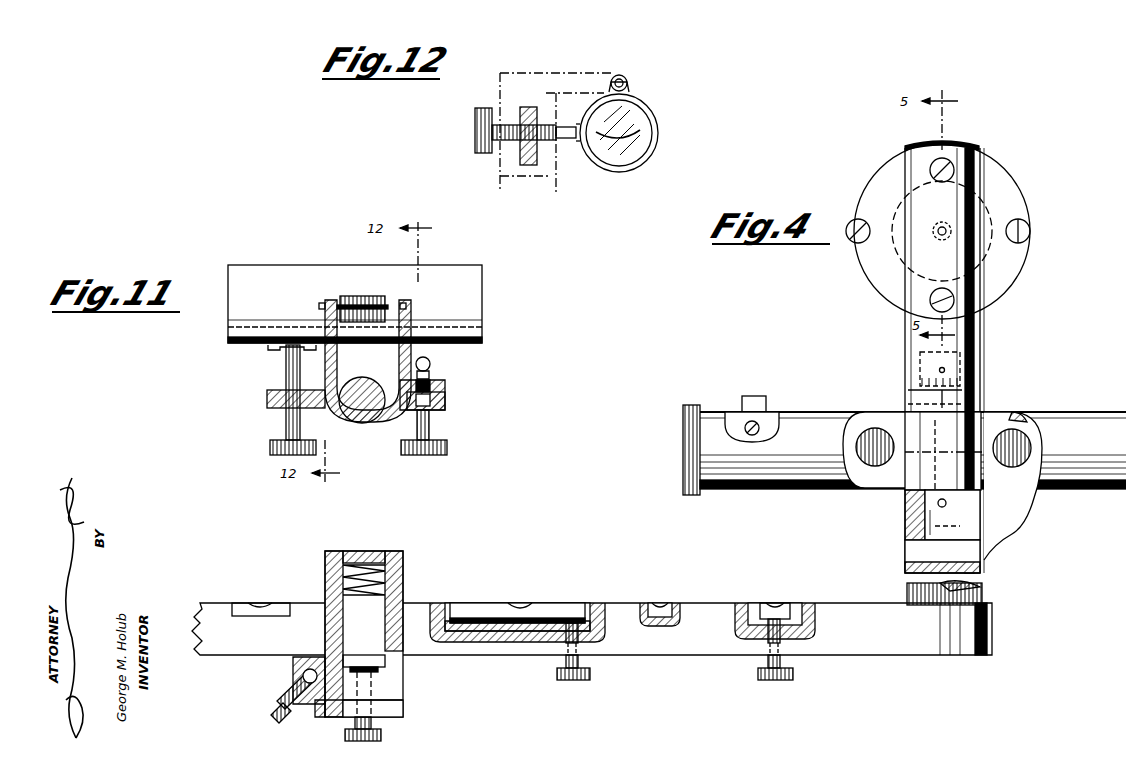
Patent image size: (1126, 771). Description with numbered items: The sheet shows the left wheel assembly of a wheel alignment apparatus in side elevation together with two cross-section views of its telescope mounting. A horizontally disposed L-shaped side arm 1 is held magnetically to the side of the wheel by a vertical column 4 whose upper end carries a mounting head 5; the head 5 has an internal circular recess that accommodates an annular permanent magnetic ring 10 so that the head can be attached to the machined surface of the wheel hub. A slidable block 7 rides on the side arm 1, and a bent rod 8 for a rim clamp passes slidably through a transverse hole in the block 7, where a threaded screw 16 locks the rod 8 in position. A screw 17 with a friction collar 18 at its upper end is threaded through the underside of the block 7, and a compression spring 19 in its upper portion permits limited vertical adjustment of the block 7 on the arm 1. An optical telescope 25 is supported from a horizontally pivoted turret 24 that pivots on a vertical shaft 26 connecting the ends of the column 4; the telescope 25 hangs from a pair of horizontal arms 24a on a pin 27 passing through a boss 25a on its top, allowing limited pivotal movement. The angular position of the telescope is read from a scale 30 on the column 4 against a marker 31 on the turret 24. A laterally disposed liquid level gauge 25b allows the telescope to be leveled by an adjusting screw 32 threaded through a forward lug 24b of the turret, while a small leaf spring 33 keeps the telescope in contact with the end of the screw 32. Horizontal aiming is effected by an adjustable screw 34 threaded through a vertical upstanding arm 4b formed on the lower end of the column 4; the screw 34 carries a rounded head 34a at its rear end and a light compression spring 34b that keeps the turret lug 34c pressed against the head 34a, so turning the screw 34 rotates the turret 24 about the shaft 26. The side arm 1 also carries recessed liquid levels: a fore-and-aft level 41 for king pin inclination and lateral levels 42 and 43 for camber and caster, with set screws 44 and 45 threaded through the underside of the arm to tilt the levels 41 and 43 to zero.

In FIG. 4, the L-shaped side arm 1 is at (848, 650).
In FIG. 4, the vertical column 4 is at (984, 592).
In FIG. 11, the vertical upstanding arm 4b is at (446, 406).
In FIG. 4, the vertical upstanding arm 4b is at (1030, 520).
In FIG. 4, the mounting head 5 is at (1024, 208).
In FIG. 4, the slidable block 7 is at (378, 554).
In FIG. 4, the bent rod 8 is at (293, 672).
In FIG. 4, the annular permanent magnetic ring 10 is at (252, 603).
In FIG. 4, the threaded screw 16 is at (268, 708).
In FIG. 4, the adjusting screw 17 is at (372, 670).
In FIG. 4, the friction collar 18 is at (358, 656).
In FIG. 4, the compression spring 19 is at (394, 586).
In FIG. 11, the turret 24 is at (358, 425).
In FIG. 4, the turret 24 is at (905, 483).
In FIG. 12, the horizontal arm 24a is at (572, 80).
In FIG. 11, the horizontal arm 24a is at (326, 312).
In FIG. 4, the horizontal arm 24a is at (860, 480).
In FIG. 12, the forward lug 24b is at (532, 160).
In FIG. 11, the forward lug 24b is at (268, 400).
In FIG. 12, the optical telescope 25 is at (655, 140).
In FIG. 11, the optical telescope 25 is at (455, 268).
In FIG. 4, the optical telescope 25 is at (800, 488).
In FIG. 12, the boss 25a is at (632, 94).
In FIG. 11, the boss 25a is at (362, 297).
In FIG. 4, the liquid level gauge 25b is at (758, 396).
In FIG. 11, the vertical shaft 26 is at (375, 436).
In FIG. 4, the vertical shaft 26 is at (930, 530).
In FIG. 12, the pin 27 is at (627, 80).
In FIG. 11, the pin 27 is at (322, 303).
In FIG. 4, the scale 30 is at (962, 379).
In FIG. 4, the marker 31 is at (935, 398).
In FIG. 12, the adjusting screw 32 is at (482, 150).
In FIG. 11, the adjusting screw 32 is at (278, 456).
In FIG. 4, the adjusting screw 32 is at (858, 444).
In FIG. 11, the leaf spring 33 is at (272, 352).
In FIG. 11, the adjustable screw 34 is at (425, 456).
In FIG. 4, the adjustable screw 34 is at (1032, 444).
In FIG. 11, the rounded head 34a is at (432, 362).
In FIG. 11, the light compression spring 34b is at (432, 389).
In FIG. 11, the bracket 34c is at (444, 377).
In FIG. 4, the fore-and-aft level 41 is at (543, 608).
In FIG. 4, the laterally disposed level 42 is at (661, 610).
In FIG. 4, the laterally disposed level 43 is at (788, 610).
In FIG. 4, the set screw 44 is at (578, 680).
In FIG. 4, the set screw 45 is at (772, 680).